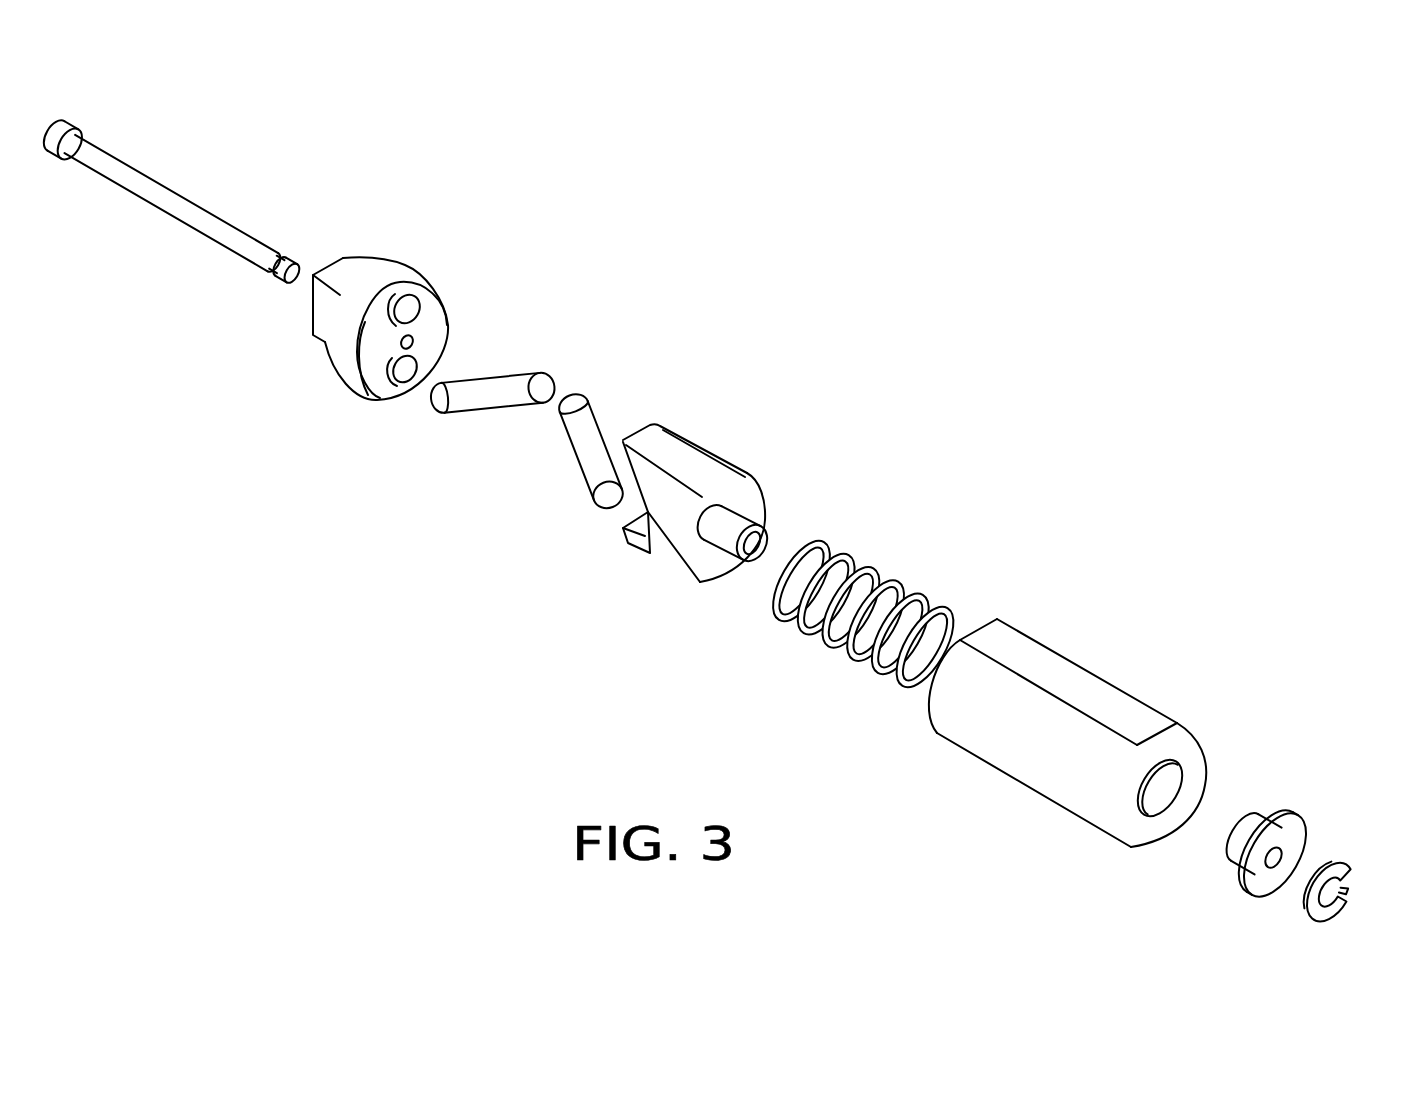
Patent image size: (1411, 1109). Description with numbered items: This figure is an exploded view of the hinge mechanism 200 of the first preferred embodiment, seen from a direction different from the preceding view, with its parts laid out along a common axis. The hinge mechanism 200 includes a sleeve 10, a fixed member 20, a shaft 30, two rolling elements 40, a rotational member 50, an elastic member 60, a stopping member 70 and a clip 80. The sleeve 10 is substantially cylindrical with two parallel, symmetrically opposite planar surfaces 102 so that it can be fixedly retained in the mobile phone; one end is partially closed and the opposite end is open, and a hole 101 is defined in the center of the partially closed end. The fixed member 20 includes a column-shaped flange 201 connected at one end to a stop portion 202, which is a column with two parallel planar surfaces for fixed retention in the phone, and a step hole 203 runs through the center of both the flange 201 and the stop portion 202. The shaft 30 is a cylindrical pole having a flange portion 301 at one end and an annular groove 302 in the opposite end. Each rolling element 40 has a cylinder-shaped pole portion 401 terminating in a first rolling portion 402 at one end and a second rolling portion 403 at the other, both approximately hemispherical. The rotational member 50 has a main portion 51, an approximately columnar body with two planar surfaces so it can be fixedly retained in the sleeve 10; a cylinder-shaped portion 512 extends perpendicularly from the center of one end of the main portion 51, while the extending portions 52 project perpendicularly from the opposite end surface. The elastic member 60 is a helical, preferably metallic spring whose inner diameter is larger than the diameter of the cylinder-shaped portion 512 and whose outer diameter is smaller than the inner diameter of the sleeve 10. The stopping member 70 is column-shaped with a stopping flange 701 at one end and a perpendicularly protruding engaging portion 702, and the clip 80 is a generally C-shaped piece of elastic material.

The hinge mechanism 200 is at (800, 201).
The sleeve 10 is at (1072, 631).
The hole 101 is at (1163, 787).
The flat surface 102 is at (1112, 698).
The fixed member 20 is at (420, 247).
The flange 201 is at (343, 357).
The stop portion 202 is at (322, 308).
The step hole 203 is at (412, 340).
The shaft 30 is at (189, 178).
The flange portion 301 is at (62, 124).
The annular groove 302 is at (280, 253).
The rolling element 40 is at (466, 430).
The pole portion 401 is at (497, 387).
The first rolling portion 402 is at (543, 380).
The second rolling portion 403 is at (438, 410).
The rotational member 50 is at (745, 437).
The main portion 51 is at (652, 438).
The cylinder-shaped portion 512 is at (735, 528).
The extending portion 52 is at (633, 537).
The elastic member 60 is at (840, 563).
The stopping member 70 is at (1312, 803).
The stopping flange 701 is at (1240, 876).
The engaging portion 702 is at (1245, 823).
The clip 80 is at (1338, 903).